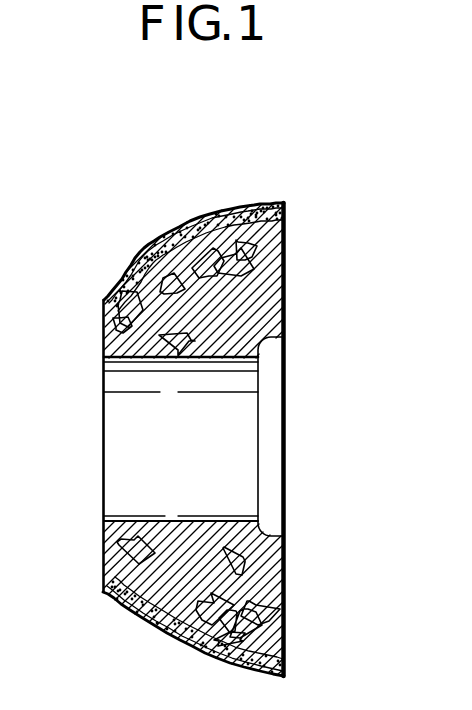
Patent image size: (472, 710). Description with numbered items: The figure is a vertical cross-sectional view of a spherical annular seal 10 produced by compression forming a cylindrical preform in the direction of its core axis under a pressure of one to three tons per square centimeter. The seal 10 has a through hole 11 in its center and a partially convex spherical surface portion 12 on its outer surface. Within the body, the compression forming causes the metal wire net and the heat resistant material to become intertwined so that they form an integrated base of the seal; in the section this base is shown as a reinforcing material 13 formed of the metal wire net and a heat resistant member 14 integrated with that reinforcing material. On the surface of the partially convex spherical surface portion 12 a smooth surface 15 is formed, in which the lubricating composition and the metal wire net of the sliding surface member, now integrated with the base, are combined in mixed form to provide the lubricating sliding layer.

The spherical annular seal 10 is at (302, 295).
The through hole 11 is at (104, 366).
The partially convex spherical surface portion 12 is at (227, 205).
The reinforcing material 13 is at (252, 325).
The heat resistant member 14 is at (285, 247).
The smooth surface 15 is at (140, 252).